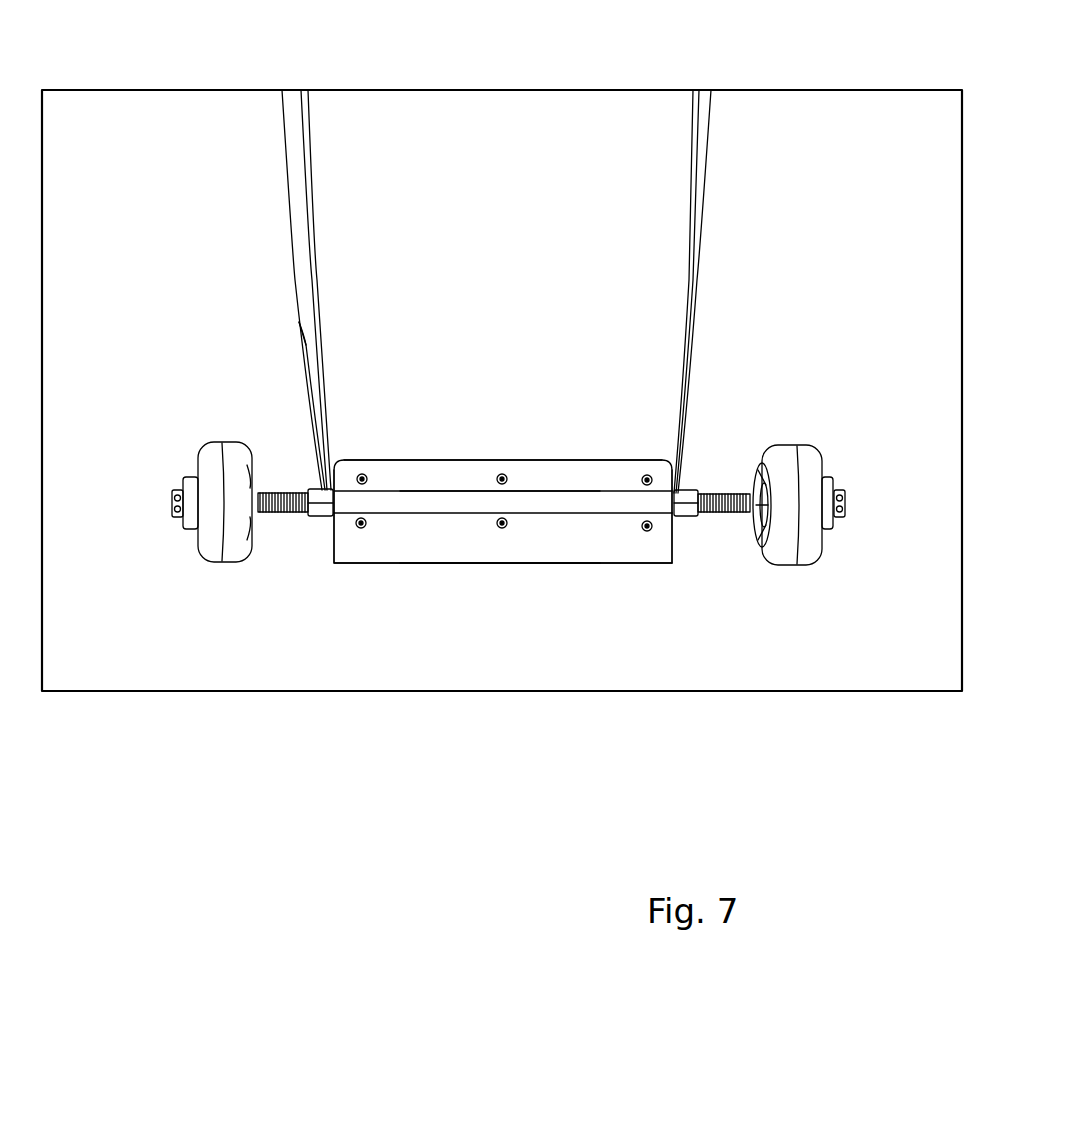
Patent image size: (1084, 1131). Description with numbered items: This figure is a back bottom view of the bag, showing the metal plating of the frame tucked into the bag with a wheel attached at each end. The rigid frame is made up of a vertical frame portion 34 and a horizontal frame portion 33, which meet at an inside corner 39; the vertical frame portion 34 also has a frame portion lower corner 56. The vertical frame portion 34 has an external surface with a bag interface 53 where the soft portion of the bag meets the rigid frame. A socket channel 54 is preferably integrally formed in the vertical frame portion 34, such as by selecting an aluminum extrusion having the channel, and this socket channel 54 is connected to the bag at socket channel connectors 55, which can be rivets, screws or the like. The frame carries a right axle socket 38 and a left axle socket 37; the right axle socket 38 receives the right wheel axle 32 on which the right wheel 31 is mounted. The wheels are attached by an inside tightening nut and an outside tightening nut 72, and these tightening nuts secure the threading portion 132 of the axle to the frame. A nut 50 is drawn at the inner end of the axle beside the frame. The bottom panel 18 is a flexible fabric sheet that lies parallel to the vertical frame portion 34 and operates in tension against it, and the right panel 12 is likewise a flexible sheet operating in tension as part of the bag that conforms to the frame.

The right panel 12 is at (297, 204).
The bottom panel 18 is at (472, 118).
The threading portion 132 is at (283, 462).
The right wheel 31 is at (803, 455).
The outside tightening nut 72 is at (845, 497).
The right wheel axle 32 is at (742, 495).
The nut 50 is at (315, 515).
The horizontal frame portion 33 is at (605, 583).
The bag interface 53 is at (557, 463).
The socket channel 54 is at (450, 503).
The right axle socket 38 is at (352, 500).
The left axle socket 37 is at (657, 505).
The frame portion lower corner 56 is at (327, 563).
The inside corner 39 is at (484, 566).
The vertical frame portion 34 is at (655, 552).
The socket channel connectors 55 is at (360, 529).